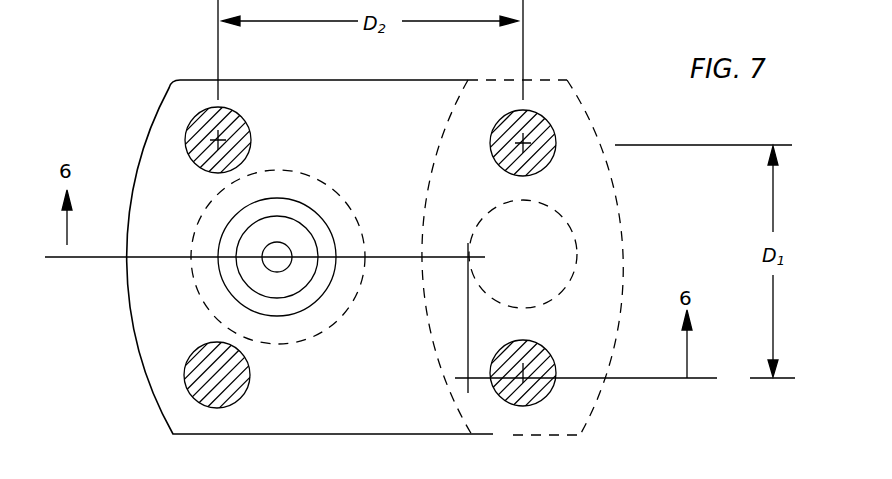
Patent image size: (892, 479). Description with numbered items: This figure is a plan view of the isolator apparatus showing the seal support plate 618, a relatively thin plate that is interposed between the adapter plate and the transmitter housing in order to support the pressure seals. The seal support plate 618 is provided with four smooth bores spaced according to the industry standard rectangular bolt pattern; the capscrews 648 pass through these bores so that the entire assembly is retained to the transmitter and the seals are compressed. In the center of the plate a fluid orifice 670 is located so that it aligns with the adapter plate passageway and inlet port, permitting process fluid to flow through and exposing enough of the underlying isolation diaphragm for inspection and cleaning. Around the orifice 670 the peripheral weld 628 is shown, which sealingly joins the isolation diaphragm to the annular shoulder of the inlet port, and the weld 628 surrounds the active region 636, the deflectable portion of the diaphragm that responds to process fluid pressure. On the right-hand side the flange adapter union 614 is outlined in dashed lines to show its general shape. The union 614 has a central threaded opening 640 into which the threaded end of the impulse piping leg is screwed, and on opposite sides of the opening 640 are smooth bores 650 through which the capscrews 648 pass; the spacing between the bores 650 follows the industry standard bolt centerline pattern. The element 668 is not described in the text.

The flange adapter union 614 is at (550, 73).
The seal support plate 618 is at (363, 352).
The peripheral weld 628 is at (272, 160).
The active region 636 is at (308, 249).
The fluid orifice 670 is at (288, 197).
The upper left threaded hole 668 is at (222, 110).
The capscrews 648 is at (238, 380).
The smooth bores 650 is at (552, 170).
The central threaded opening 640 is at (572, 248).